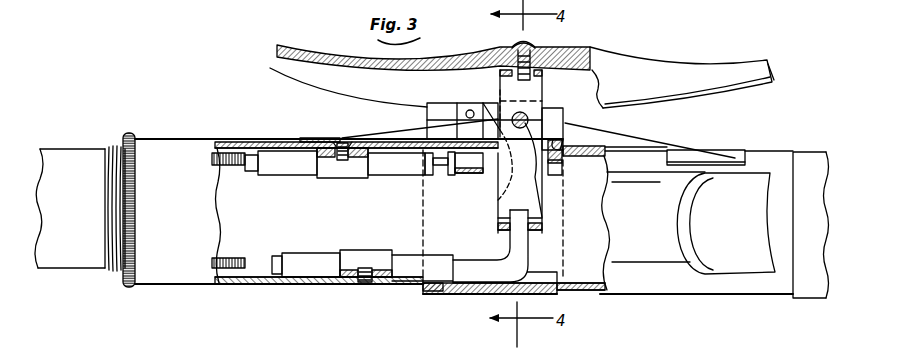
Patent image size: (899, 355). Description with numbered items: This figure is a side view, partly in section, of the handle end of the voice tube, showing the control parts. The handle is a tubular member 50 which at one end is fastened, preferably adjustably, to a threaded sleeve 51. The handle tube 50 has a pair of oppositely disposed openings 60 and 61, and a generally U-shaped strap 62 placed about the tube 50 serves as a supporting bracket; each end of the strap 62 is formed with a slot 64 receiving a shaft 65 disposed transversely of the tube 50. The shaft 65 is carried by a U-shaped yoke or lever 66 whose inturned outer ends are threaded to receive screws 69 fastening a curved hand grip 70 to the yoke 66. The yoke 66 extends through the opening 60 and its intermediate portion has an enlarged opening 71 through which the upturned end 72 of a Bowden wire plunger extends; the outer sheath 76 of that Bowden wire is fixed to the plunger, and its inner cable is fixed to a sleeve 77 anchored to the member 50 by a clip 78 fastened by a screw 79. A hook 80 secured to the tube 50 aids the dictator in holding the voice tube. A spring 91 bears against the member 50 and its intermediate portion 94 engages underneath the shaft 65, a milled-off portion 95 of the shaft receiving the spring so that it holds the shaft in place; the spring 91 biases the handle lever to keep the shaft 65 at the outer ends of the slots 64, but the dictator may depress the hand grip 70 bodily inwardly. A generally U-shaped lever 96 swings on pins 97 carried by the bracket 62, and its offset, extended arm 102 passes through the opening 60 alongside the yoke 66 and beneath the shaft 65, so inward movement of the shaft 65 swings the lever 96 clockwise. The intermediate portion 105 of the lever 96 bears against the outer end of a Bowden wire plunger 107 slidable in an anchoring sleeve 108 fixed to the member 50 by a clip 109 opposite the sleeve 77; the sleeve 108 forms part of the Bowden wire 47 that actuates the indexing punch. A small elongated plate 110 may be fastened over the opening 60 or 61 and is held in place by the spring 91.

The Bowden wire 47 is at (232, 170).
The tubular member 50 is at (183, 272).
The threaded sleeve 51 is at (72, 158).
The opening 60 is at (560, 147).
The opening 61 is at (437, 291).
The U-shaped strap 62 is at (468, 294).
The slot 64 is at (497, 185).
The shaft 65 is at (540, 152).
The U-shaped yoke or lever 66 is at (545, 92).
The screw 69 is at (538, 43).
The curved hand grip 70 is at (618, 58).
The enlarged opening 71 is at (547, 221).
The upturned end 72 is at (510, 216).
The outer sheath 76 is at (242, 258).
The sleeve 77 is at (313, 263).
The clip 78 is at (372, 263).
The screw 79 is at (362, 284).
The hook 80 is at (660, 247).
The spring 91 is at (378, 130).
The intermediate portion 94 is at (540, 180).
The milled portion 95 is at (512, 150).
The U-shaped lever 96 is at (455, 137).
The pivot pin 97 is at (467, 110).
The arm 102 is at (548, 168).
The intermediate portion 105 is at (438, 170).
The Bowden wire plunger 107 is at (430, 178).
The anchoring sleeve 108 is at (282, 163).
The clip 109 is at (353, 175).
The plate 110 is at (322, 137).